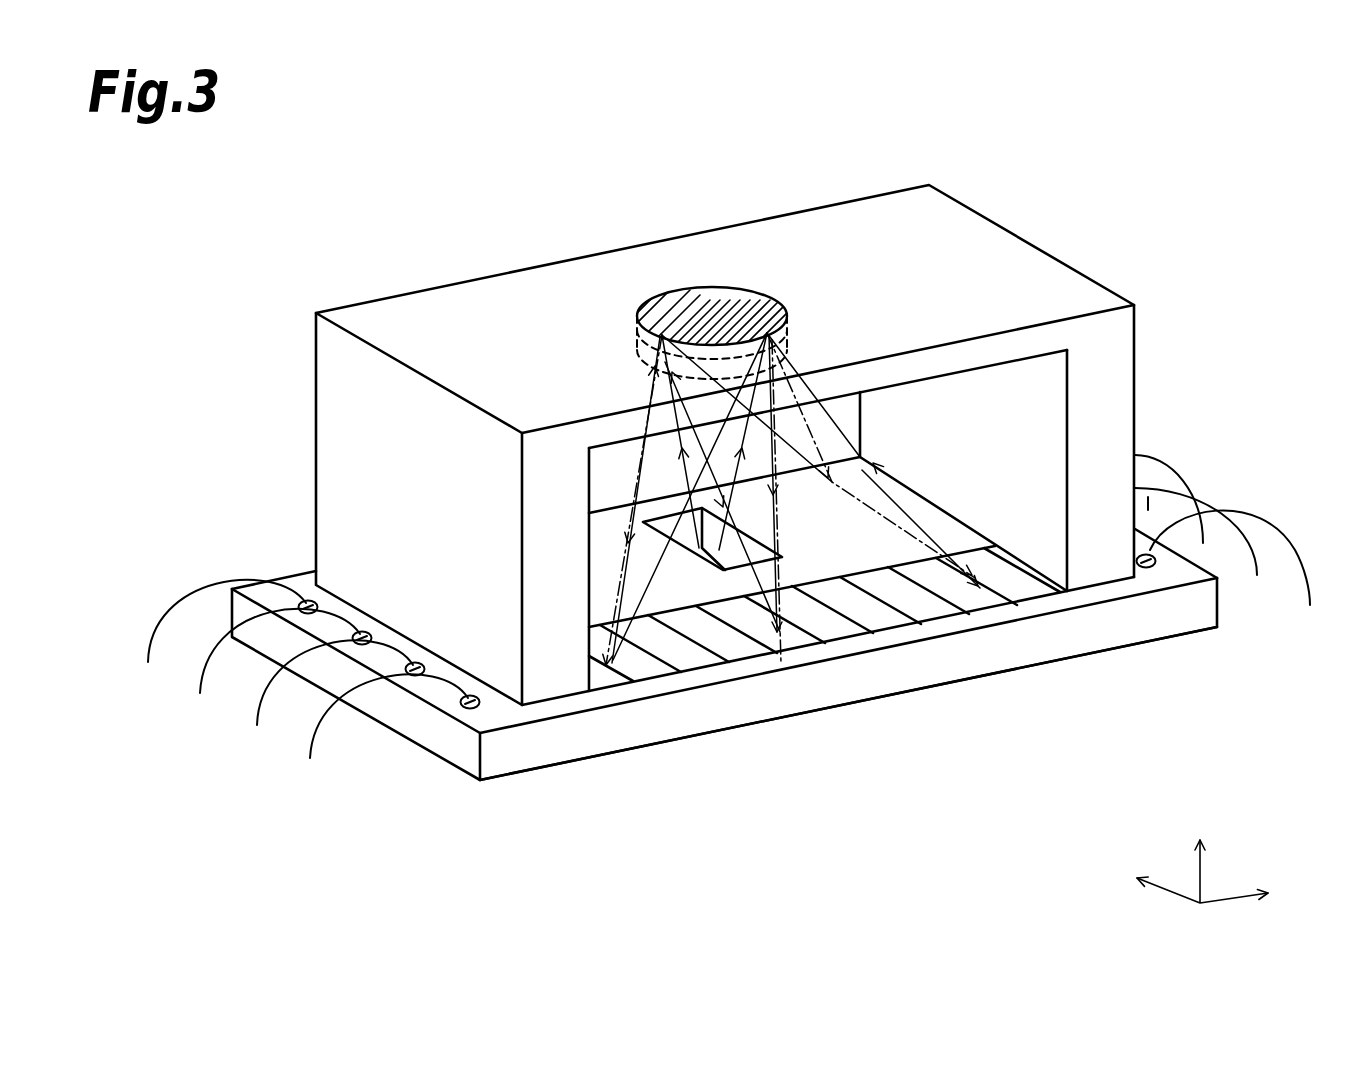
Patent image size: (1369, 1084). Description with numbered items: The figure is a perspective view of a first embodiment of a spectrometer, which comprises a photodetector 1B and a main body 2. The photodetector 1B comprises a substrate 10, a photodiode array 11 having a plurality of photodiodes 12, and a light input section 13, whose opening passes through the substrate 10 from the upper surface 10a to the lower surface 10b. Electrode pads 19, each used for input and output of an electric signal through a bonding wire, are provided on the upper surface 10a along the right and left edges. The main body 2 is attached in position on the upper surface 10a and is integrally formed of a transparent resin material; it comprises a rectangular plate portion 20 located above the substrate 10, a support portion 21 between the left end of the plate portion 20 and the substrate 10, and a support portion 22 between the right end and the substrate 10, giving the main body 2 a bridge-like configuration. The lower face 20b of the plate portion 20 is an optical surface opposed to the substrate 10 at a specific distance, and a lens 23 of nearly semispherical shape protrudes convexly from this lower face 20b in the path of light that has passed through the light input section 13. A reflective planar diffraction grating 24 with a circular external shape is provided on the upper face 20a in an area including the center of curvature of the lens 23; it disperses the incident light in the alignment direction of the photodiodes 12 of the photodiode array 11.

The photodetector 1B is at (752, 762).
The main body 2 is at (447, 278).
The substrate 10 is at (300, 572).
The upper surface of substrate 10a is at (1145, 582).
The lower surface of substrate 10b is at (560, 780).
The photodiode array 11 is at (940, 618).
The photodiodes 12 is at (830, 623).
The light input section 13 is at (757, 552).
The electrode pads 19 is at (410, 672).
The plate portion 20 is at (825, 228).
The upper face of plate portion 20a is at (632, 262).
The lower face of plate portion 20b is at (914, 390).
The support portion 21 is at (340, 410).
The support portion 22 is at (1115, 382).
The lens 23 is at (640, 345).
The planar diffraction grating 24 is at (767, 295).